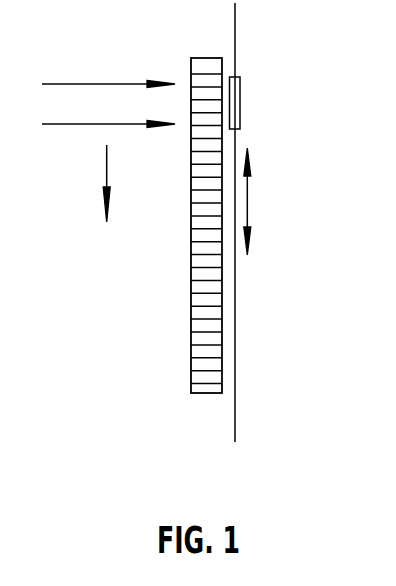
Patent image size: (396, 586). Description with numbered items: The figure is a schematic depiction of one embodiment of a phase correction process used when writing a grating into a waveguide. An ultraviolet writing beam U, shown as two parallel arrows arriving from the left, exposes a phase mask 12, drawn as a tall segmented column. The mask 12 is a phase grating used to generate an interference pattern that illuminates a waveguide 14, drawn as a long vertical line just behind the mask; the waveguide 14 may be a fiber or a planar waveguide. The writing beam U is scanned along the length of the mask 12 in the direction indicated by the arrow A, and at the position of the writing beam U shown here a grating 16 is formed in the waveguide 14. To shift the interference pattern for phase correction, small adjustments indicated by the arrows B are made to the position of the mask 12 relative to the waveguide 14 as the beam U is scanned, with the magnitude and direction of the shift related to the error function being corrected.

The phase mask 12 is at (177, 202).
The waveguide 14 is at (268, 222).
The grating 16 is at (269, 95).
The ultraviolet writing beam U is at (94, 126).
The arrow A is at (86, 186).
The arrows B is at (273, 201).